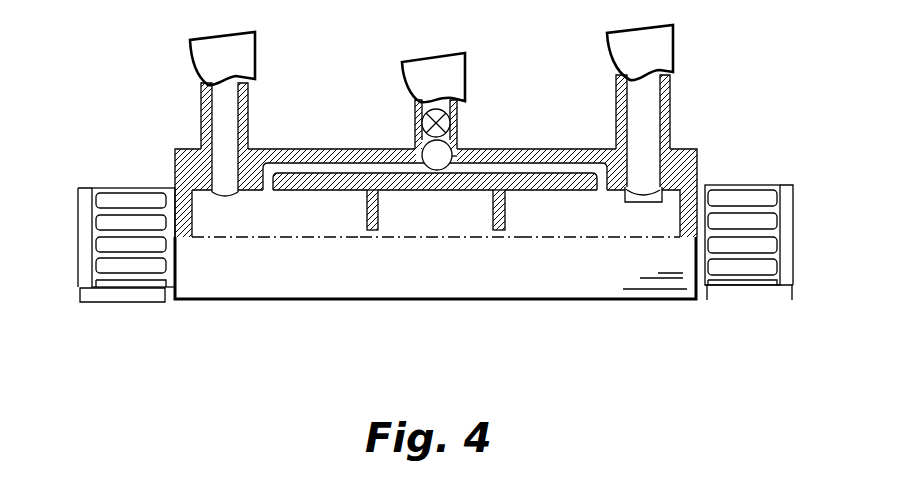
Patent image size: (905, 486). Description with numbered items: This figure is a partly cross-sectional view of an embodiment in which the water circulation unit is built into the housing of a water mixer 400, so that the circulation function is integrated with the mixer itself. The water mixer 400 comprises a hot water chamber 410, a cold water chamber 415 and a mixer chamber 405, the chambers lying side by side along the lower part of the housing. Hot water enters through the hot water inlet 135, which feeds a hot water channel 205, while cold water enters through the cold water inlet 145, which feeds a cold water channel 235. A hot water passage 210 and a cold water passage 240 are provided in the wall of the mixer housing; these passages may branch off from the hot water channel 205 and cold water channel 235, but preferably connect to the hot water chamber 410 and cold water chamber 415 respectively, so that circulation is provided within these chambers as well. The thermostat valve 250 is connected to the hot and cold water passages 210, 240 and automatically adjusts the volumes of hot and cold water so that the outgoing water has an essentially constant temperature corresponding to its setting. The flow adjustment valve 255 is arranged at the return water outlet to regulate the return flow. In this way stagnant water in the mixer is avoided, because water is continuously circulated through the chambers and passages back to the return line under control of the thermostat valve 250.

The hot water inlet 135 is at (200, 125).
The cold water inlet 145 is at (670, 115).
The hot water channel 205 is at (228, 63).
The hot water passage 210 is at (305, 170).
The cold water channel 235 is at (647, 63).
The cold water passage 240 is at (538, 165).
The thermostat valve 250 is at (462, 157).
The flow adjustment valve 255 is at (420, 120).
The water mixer 400 is at (230, 305).
The mixer chamber 405 is at (425, 212).
The hot water chamber 410 is at (238, 210).
The cold water chamber 415 is at (607, 213).